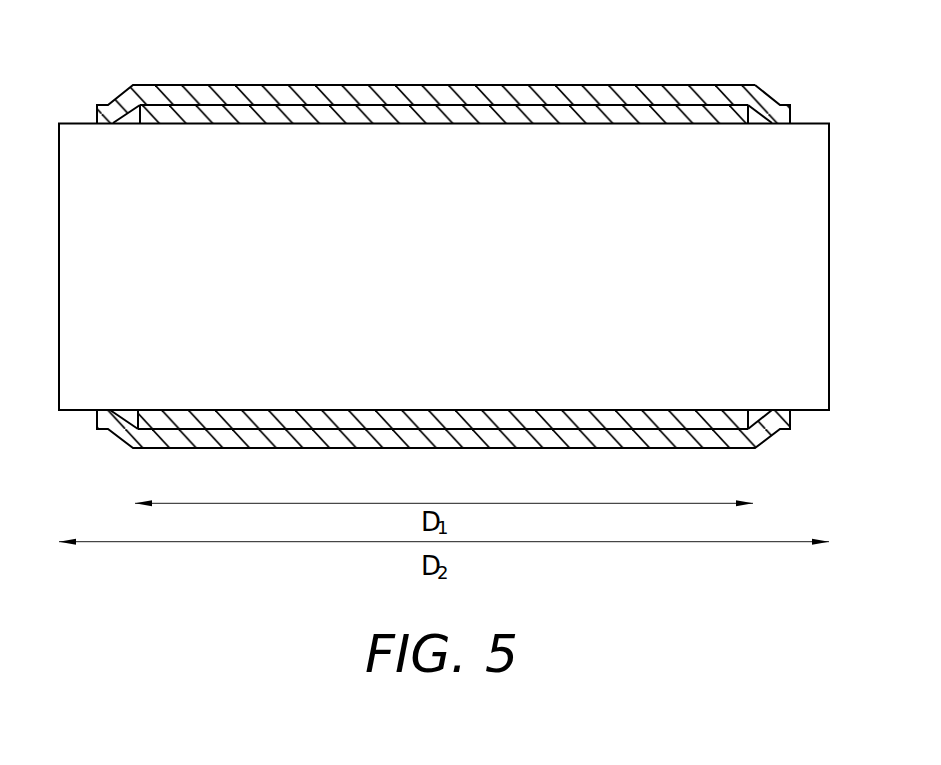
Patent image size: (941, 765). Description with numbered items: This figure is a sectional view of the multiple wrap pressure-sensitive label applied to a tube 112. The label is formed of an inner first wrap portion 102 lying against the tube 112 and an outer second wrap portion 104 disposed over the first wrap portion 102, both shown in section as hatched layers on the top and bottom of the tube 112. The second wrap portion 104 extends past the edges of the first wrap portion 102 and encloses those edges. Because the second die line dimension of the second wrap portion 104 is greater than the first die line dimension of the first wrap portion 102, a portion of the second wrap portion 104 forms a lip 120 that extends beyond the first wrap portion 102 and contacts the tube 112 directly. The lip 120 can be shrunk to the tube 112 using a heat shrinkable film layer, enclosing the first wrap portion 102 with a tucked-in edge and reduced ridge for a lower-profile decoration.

The first wrap portion 102 is at (673, 115).
The second wrap portion 104 is at (702, 92).
The tube 112 is at (802, 148).
The lip 120 is at (770, 92).